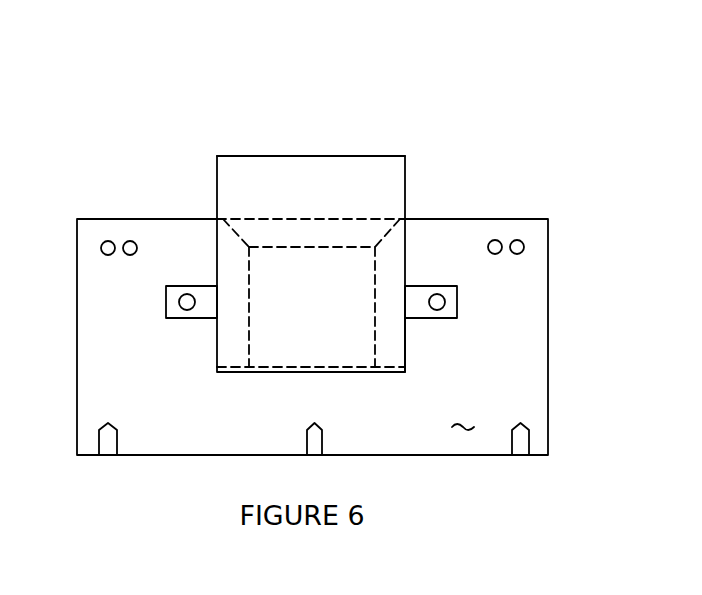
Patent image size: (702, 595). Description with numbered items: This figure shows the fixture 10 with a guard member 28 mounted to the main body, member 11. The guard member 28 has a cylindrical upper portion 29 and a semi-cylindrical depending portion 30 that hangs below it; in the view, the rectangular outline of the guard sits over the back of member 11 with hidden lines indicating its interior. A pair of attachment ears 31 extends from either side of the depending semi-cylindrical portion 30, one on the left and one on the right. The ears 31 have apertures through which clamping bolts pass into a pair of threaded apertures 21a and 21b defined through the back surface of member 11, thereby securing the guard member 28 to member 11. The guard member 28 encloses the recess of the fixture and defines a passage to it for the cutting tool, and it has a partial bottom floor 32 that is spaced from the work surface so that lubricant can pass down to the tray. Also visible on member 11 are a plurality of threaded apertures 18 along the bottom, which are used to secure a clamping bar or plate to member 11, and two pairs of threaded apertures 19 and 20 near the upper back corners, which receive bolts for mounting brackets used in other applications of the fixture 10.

The fixture 10 is at (477, 156).
The member 11 is at (280, 337).
The threaded apertures 18 is at (128, 421).
The apertures 19 is at (501, 231).
The apertures 20 is at (115, 232).
The threaded aperture 21a is at (156, 326).
The threaded aperture 21b is at (466, 325).
The guard member 28 is at (280, 129).
The cylindrical upper portion 29 is at (361, 147).
The semi-cylindrical depending portion 30 is at (442, 352).
The attachment ears 31 is at (153, 294).
The partial bottom floor 32 is at (301, 358).